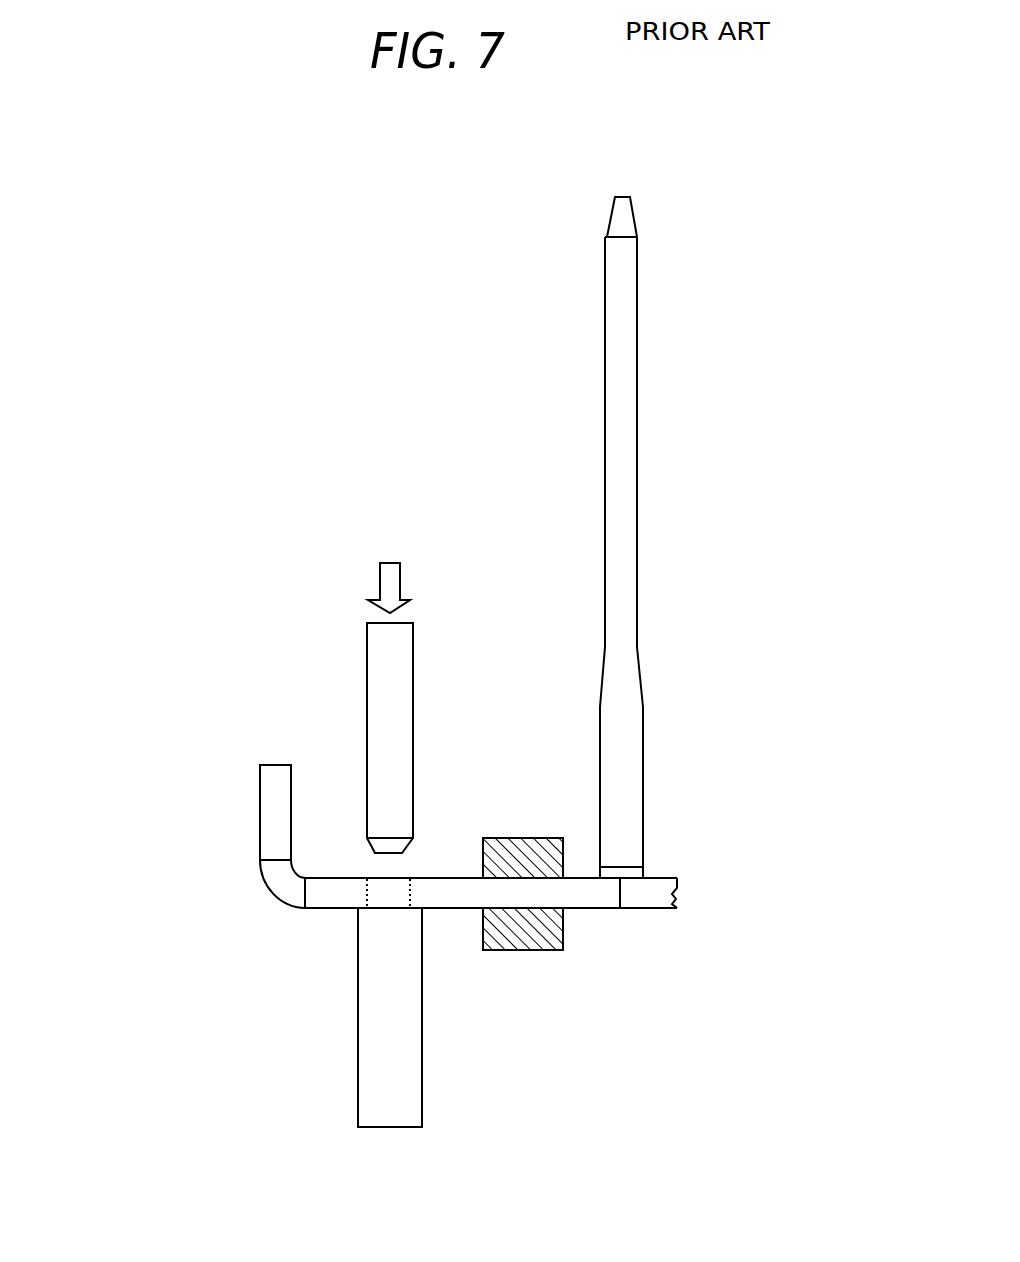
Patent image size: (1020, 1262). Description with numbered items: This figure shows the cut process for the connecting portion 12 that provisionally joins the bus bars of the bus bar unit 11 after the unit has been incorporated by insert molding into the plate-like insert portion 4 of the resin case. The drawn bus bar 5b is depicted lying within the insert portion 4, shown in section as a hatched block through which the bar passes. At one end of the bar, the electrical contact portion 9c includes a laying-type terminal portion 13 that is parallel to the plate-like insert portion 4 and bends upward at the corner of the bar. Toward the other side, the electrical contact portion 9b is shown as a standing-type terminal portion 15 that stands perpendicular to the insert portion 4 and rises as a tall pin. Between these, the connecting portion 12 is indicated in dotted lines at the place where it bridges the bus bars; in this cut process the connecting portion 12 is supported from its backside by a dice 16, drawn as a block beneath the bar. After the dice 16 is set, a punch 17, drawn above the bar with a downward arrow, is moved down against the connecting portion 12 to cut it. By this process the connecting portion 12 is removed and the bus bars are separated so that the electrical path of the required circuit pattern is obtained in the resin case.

The bus bar unit 11 is at (350, 314).
The electrical contact portion 9b is at (582, 292).
The terminal portion 15 is at (637, 403).
The punch 17 is at (413, 728).
The electrical contact portion 9c is at (253, 722).
The terminal portion 13 is at (272, 765).
The bus bar 5b is at (226, 823).
The connecting portion 12 is at (367, 893).
The insert portion 4 is at (510, 950).
The dice 16 is at (422, 1077).